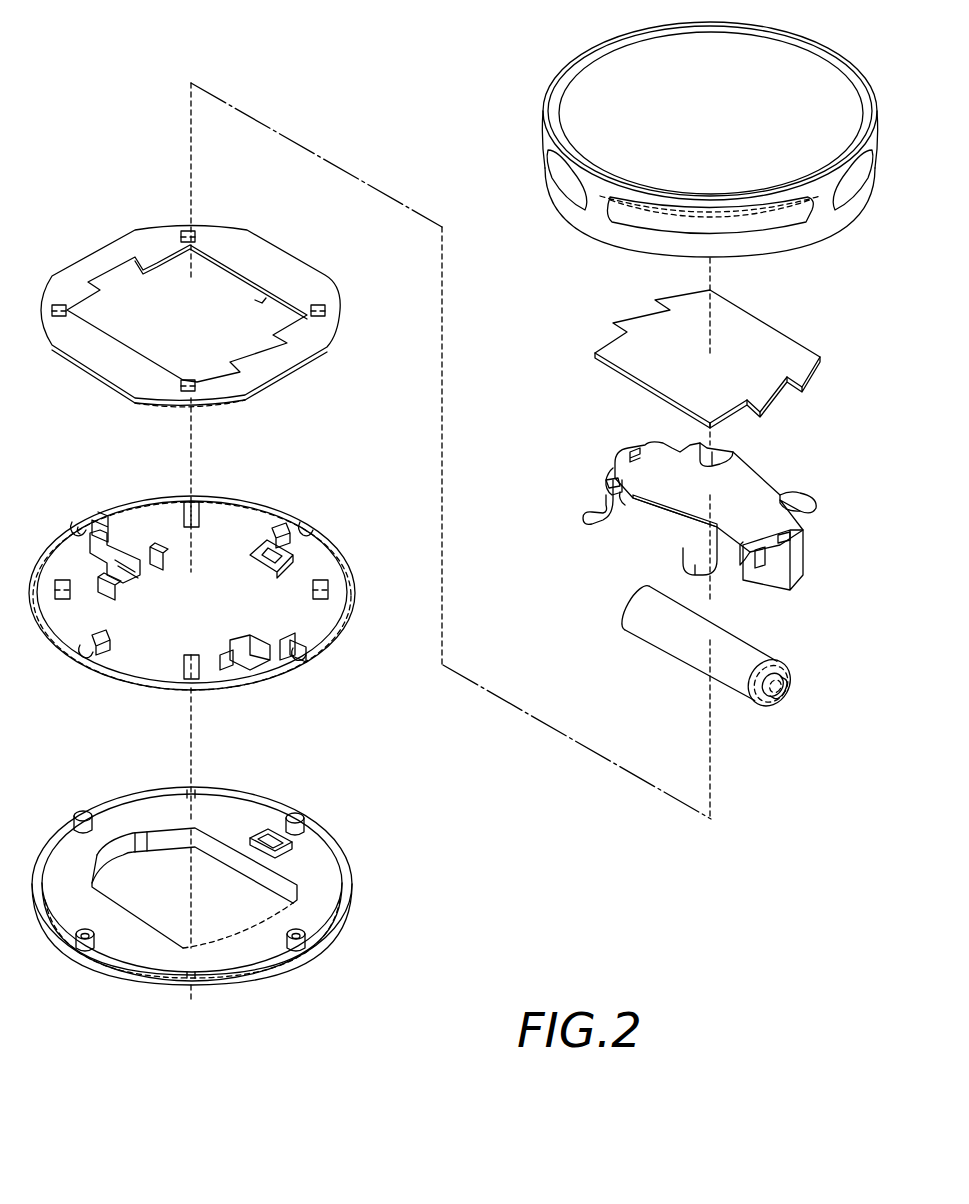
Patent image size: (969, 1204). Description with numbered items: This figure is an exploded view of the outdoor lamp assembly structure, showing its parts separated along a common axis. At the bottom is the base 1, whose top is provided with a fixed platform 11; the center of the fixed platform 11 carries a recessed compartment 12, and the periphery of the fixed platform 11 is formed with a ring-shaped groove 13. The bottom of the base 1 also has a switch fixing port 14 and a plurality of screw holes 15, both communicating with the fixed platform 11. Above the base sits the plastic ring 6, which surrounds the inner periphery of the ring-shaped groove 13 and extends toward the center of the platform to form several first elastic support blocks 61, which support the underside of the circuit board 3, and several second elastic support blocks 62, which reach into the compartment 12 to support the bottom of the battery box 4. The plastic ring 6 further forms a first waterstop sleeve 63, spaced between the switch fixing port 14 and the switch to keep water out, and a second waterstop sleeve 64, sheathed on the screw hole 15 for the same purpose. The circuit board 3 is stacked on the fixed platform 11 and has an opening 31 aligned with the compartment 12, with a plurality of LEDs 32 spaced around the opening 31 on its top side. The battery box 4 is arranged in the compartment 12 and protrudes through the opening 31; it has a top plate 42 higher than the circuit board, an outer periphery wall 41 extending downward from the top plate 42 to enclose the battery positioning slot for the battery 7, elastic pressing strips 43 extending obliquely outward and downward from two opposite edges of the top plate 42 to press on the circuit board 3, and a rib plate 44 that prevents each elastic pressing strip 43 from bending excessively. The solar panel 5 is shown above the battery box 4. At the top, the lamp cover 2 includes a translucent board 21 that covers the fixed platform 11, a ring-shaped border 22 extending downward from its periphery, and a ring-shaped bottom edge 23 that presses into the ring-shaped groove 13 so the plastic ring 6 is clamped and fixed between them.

The base 1 is at (275, 972).
The fixed platform 11 is at (315, 838).
The recessed compartment 12 is at (208, 870).
The ring-shaped groove 13 is at (116, 972).
The switch fixing port 14 is at (272, 835).
The screw holes 15 is at (70, 925).
The lamp cover 2 is at (556, 66).
The translucent board 21 is at (795, 88).
The ring-shaped border 22 is at (590, 212).
The ring-shaped bottom edge 23 is at (640, 245).
The circuit board 3 is at (288, 256).
The opening 31 is at (225, 300).
The LEDs 32 is at (60, 304).
The battery box 4 is at (624, 448).
The outer periphery wall 41 is at (690, 525).
The top plate 42 is at (725, 485).
The elastic pressing strip 43 is at (606, 480).
The rib plate 44 is at (645, 512).
The solar panel 5 is at (748, 325).
The plastic ring 6 is at (137, 500).
The first elastic support blocks 61 is at (108, 515).
The second elastic support blocks 62 is at (140, 560).
The first waterstop sleeve 63 is at (250, 550).
The second waterstop sleeve 64 is at (76, 522).
The battery 7 is at (742, 650).